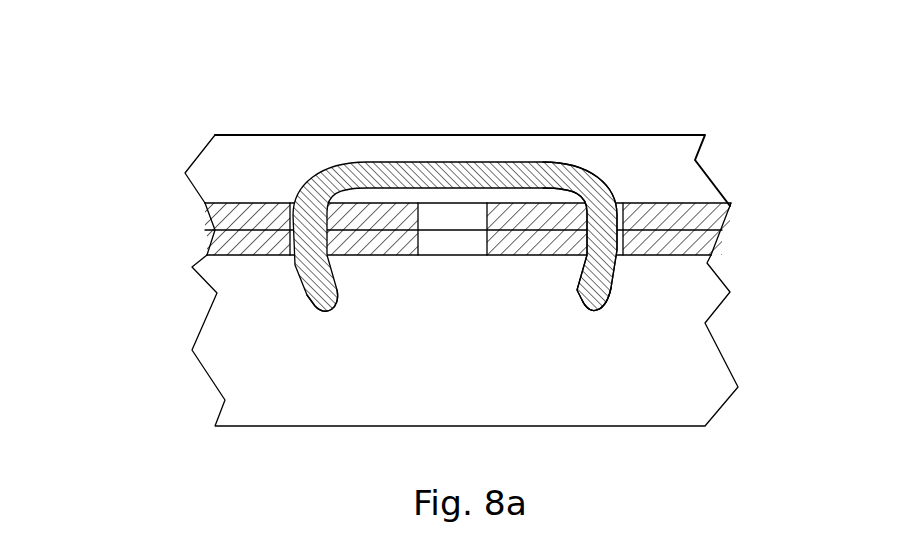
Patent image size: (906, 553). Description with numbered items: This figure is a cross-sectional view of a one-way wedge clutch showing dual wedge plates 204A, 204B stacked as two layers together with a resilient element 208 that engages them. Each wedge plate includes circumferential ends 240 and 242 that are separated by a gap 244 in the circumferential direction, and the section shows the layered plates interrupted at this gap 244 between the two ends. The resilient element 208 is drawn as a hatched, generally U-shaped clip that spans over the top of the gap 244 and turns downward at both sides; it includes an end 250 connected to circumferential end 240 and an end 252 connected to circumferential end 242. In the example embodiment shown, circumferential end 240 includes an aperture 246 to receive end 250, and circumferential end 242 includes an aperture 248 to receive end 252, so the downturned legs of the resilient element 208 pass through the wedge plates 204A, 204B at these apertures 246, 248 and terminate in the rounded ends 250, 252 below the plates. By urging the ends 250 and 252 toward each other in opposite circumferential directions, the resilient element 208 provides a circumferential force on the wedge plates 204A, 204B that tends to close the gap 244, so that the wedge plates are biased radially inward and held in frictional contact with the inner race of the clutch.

The resilient element 208 is at (492, 124).
The wedge plate 204A is at (213, 214).
The wedge plate 204B is at (217, 239).
The circumferential end 240 is at (218, 203).
The circumferential end 242 is at (693, 203).
The gap 244 is at (457, 270).
The aperture 246 is at (295, 204).
The aperture 248 is at (617, 204).
The end of resilient element 250 is at (322, 314).
The end of resilient element 252 is at (588, 314).